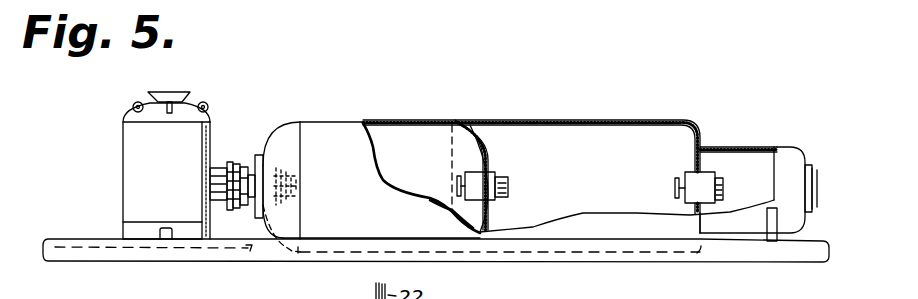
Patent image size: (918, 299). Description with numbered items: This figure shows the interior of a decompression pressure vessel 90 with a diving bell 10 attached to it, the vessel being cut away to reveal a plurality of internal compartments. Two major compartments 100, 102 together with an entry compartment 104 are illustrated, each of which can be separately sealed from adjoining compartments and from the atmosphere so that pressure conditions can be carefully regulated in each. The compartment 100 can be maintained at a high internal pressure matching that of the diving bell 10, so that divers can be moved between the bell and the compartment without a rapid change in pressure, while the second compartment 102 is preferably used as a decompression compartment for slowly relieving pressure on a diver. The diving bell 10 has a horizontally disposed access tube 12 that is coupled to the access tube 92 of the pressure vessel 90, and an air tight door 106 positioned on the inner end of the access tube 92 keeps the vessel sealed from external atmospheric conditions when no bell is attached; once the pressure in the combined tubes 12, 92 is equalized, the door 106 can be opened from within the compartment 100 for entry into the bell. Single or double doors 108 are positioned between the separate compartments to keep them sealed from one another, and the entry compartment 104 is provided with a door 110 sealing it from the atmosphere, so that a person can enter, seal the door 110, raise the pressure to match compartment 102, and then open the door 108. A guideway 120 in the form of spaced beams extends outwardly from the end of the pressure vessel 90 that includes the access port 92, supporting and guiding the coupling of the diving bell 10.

The diving bell 10 is at (118, 166).
The access tube 12 is at (217, 157).
The access tube 92 is at (249, 156).
The pressure vessel 90 is at (495, 115).
The compartment 100 is at (426, 171).
The second compartment 102 is at (590, 176).
The entry compartment 104 is at (762, 178).
The air tight door 106 is at (297, 186).
The door 108 is at (460, 171).
The door 110 is at (818, 164).
The guideway 120 is at (255, 247).